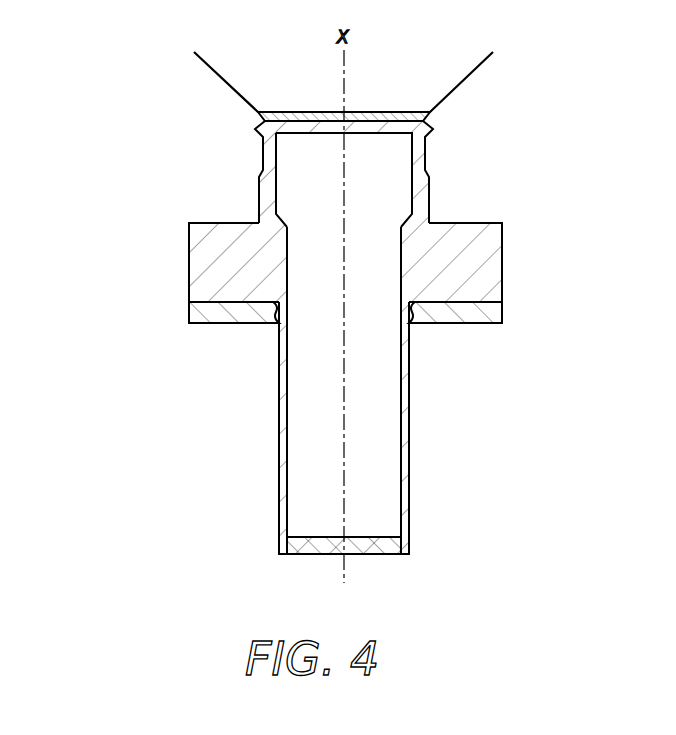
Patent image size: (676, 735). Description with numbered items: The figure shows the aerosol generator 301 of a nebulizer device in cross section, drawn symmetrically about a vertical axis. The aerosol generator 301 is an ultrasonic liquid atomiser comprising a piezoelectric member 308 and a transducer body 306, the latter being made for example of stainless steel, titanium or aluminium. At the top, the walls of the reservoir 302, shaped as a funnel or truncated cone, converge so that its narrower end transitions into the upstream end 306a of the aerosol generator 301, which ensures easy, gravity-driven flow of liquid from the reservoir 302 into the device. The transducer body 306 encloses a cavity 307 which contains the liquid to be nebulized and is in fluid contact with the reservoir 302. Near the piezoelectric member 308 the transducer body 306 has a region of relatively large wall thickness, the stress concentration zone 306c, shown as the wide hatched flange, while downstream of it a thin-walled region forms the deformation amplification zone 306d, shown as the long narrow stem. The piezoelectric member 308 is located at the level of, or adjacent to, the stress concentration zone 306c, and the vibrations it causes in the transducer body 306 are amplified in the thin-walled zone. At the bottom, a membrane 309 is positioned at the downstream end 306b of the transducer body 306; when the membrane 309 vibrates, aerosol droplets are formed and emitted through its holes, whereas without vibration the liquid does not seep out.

The aerosol generator 301 is at (103, 108).
The reservoir 302 is at (481, 65).
The transducer body 306 is at (430, 197).
The upstream end 306a is at (430, 128).
The downstream end 306b is at (410, 547).
The stress concentration zone 306c is at (183, 225).
The deformation amplification zone 306d is at (181, 323).
The cavity 307 is at (383, 462).
The piezoelectric member 308 is at (502, 312).
The membrane 309 is at (383, 557).